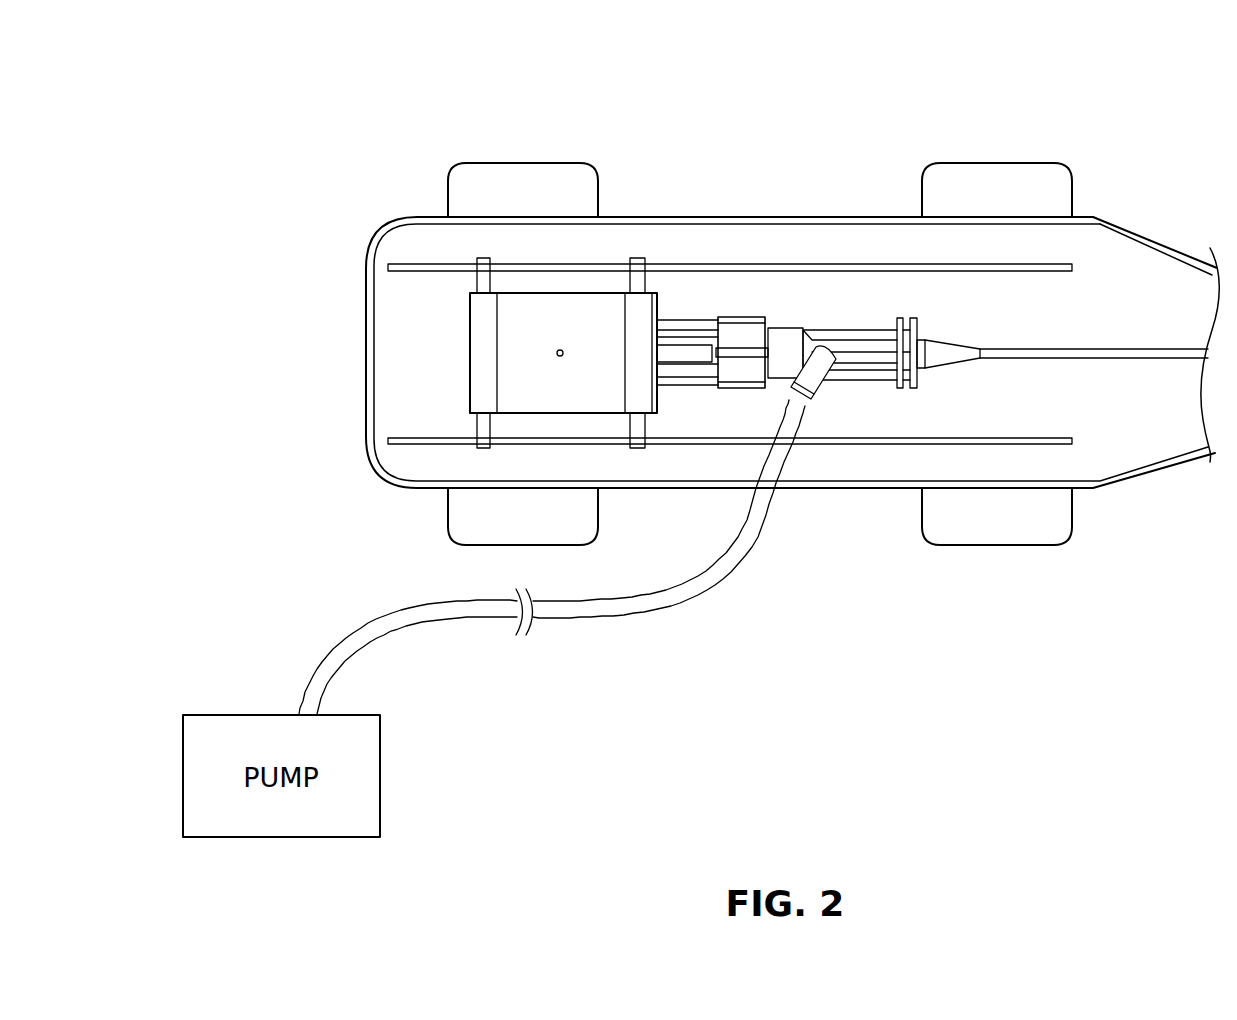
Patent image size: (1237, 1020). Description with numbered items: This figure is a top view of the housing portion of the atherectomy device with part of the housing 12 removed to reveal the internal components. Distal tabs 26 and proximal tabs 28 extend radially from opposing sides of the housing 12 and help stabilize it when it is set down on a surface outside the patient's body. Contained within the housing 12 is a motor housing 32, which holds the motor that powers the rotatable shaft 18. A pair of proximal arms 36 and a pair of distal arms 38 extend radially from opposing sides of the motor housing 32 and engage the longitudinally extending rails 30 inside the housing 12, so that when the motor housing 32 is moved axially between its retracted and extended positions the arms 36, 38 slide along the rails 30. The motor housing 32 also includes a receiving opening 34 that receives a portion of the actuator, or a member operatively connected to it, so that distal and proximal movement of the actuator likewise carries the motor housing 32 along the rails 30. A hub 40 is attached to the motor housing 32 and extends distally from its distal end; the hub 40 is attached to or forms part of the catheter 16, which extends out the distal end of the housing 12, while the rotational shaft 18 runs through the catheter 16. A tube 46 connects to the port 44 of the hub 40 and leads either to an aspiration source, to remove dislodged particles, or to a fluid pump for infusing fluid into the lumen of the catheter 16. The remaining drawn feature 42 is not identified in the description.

The housing 12 is at (897, 119).
The catheter 16 is at (1107, 345).
The shaft 18 is at (718, 317).
The distal tabs 26 is at (1028, 163).
The proximal tabs 28 is at (538, 163).
The rails 30 is at (605, 262).
The motor housing 32 is at (512, 347).
The receiving opening 34 is at (559, 349).
The proximal arms 36 is at (477, 283).
The distal arms 38 is at (640, 258).
The hub 40 is at (755, 317).
The drive shaft 42 is at (692, 357).
The port 44 is at (818, 390).
The tube 46 is at (703, 588).